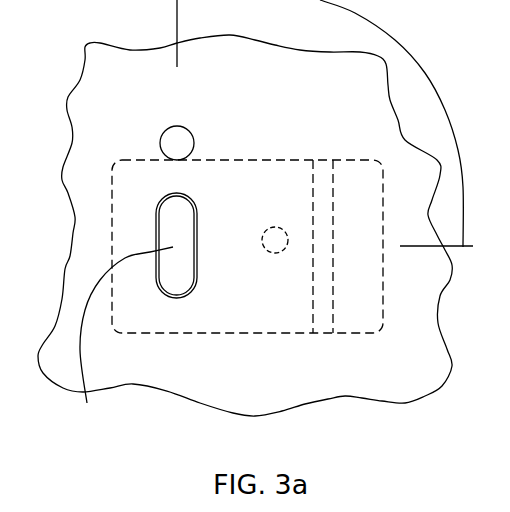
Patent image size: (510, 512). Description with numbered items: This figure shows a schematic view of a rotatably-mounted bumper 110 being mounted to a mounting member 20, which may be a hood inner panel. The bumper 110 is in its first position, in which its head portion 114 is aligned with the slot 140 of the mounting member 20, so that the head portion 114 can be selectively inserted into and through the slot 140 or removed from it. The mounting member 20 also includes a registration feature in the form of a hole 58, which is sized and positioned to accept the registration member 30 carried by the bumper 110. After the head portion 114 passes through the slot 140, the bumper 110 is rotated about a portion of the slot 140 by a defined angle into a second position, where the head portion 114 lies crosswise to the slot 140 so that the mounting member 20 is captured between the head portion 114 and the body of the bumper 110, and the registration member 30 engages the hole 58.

The mounting member 20 is at (242, 398).
The rotatably-mounted bumper 110 is at (283, 134).
The hole 58 is at (182, 127).
The registration member 30 is at (275, 227).
The slot 140 is at (197, 272).
The head portion 114 is at (126, 340).